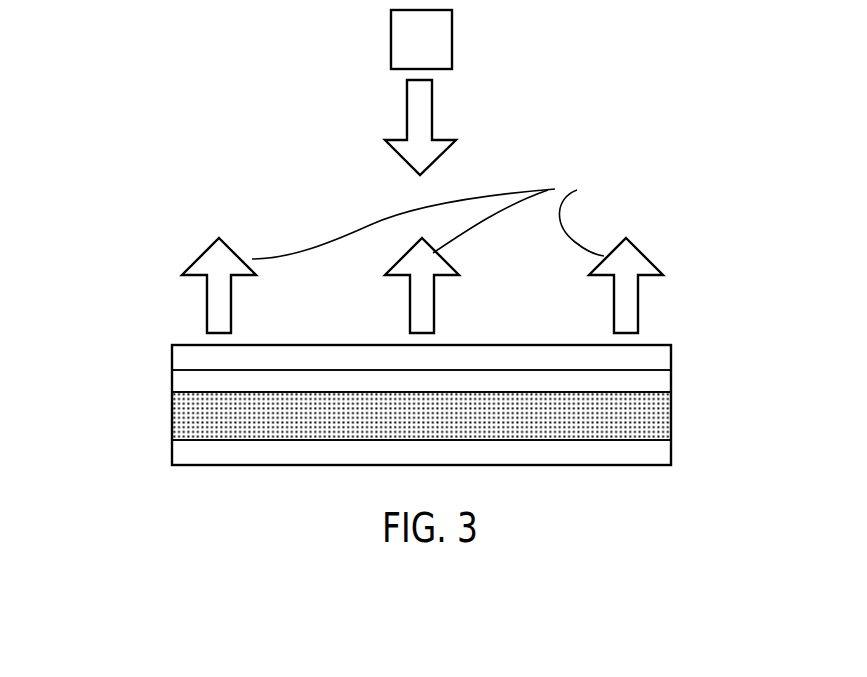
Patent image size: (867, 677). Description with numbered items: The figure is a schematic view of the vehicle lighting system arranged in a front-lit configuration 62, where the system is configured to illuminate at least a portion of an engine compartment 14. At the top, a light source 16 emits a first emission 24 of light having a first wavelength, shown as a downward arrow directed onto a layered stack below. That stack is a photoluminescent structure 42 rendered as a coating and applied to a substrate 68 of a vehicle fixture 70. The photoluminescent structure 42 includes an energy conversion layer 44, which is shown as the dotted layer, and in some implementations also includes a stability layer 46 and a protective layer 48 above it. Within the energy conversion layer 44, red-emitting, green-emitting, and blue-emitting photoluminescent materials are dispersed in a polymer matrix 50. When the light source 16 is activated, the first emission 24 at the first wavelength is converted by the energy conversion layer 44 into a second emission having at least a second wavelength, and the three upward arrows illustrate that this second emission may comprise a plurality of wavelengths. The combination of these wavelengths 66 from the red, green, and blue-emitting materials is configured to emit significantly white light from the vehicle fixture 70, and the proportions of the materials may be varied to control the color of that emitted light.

The engine compartment 14 is at (189, 102).
The light source 16 is at (421, 39).
The first emission 24 is at (410, 107).
The photoluminescent structure 42 is at (99, 402).
The energy conversion layer 44 is at (660, 416).
The stability layer 46 is at (663, 380).
The protective layer 48 is at (663, 360).
The polymer matrix 50 is at (191, 414).
The front-lit configuration 62 is at (535, 155).
The converted light of different wavelengths 66 is at (555, 189).
The substrate 68 is at (663, 450).
The vehicle fixture 70 is at (132, 322).